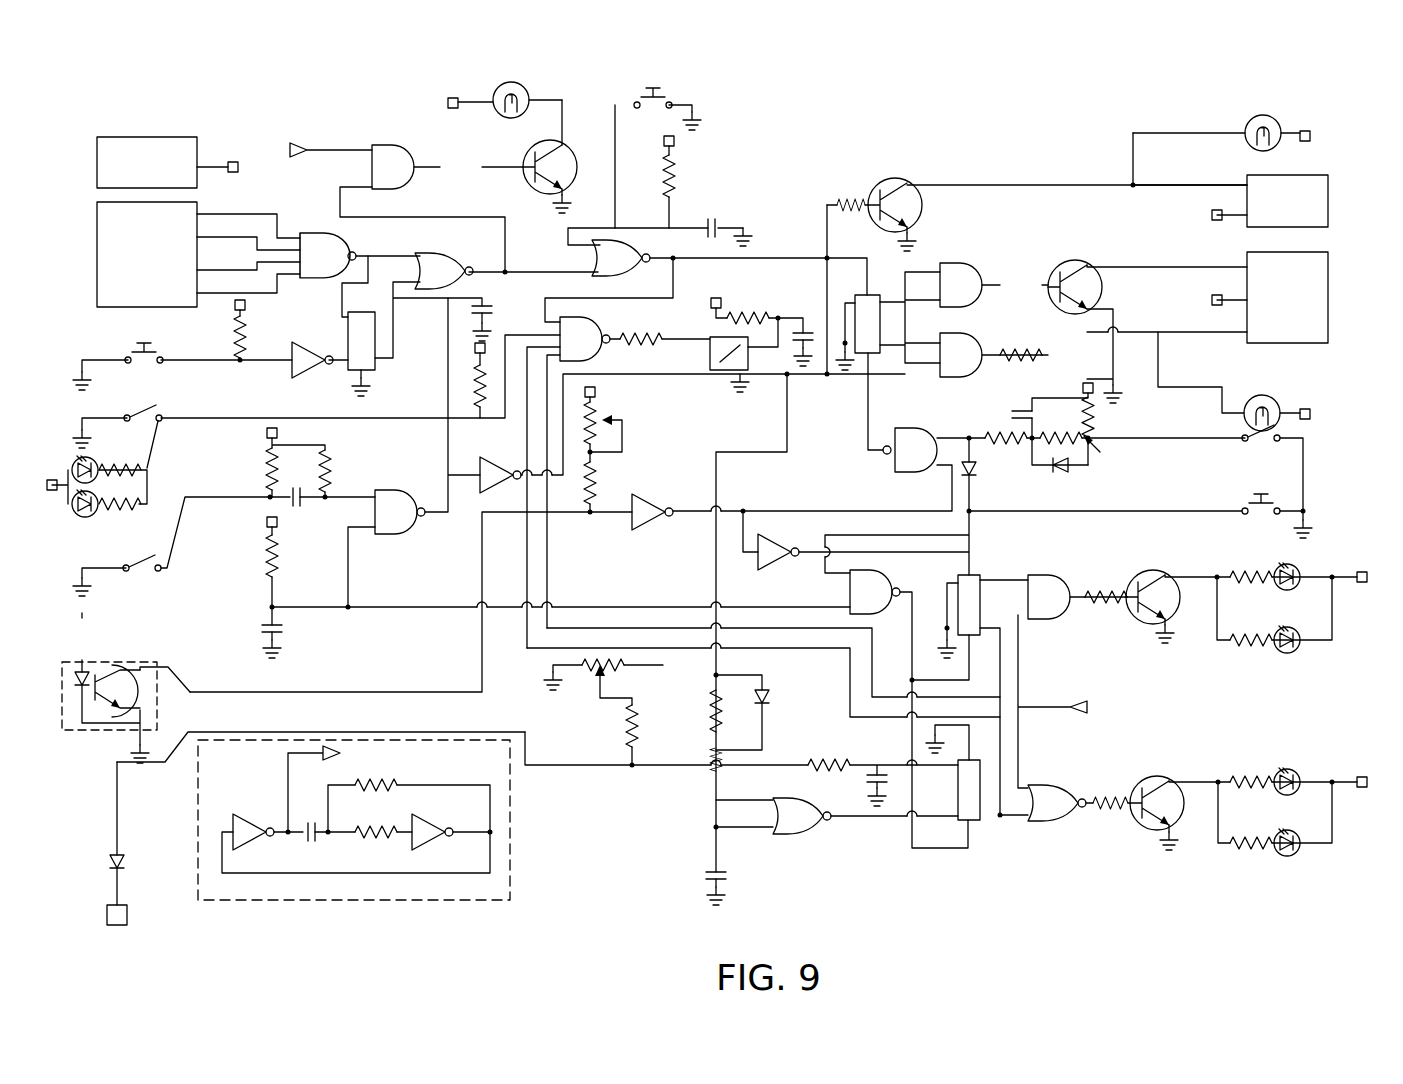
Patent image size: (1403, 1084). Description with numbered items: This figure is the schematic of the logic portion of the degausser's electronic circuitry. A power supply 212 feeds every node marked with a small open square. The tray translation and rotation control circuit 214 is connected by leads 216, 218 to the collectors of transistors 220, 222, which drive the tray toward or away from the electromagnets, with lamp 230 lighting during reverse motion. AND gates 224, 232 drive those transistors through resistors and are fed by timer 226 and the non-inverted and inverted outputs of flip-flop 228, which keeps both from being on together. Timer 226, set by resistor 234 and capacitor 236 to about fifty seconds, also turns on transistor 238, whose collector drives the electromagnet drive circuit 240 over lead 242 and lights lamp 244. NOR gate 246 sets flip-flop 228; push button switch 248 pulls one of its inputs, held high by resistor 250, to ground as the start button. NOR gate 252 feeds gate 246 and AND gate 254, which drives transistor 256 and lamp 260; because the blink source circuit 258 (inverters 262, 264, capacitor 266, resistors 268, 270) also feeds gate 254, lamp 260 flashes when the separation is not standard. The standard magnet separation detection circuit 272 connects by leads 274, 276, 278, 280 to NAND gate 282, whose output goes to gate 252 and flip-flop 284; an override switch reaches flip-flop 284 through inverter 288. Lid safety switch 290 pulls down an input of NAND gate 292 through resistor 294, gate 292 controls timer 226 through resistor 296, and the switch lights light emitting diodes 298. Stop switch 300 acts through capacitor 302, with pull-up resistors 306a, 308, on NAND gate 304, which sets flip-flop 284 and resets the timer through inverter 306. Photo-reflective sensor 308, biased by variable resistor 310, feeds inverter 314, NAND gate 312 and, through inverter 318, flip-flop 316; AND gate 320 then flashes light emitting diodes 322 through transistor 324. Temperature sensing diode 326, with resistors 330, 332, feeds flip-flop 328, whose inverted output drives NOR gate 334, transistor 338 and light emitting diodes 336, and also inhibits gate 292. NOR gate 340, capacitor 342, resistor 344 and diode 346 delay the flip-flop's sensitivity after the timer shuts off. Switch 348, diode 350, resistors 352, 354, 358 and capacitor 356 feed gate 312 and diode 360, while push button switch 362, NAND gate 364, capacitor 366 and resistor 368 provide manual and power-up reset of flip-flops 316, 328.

The power supply 212 is at (163, 135).
The tray translation and rotation control circuit 214 is at (1328, 325).
The lead 216 is at (1166, 265).
The lead 218 is at (1176, 330).
The transistor 220 is at (1060, 265).
The transistor 222 is at (1052, 340).
The AND gate 224 is at (962, 262).
The timer 226 is at (716, 368).
The flip-flop 228 is at (872, 300).
The lamp 230 is at (1282, 395).
The AND gate 232 is at (1000, 370).
The resistor 234 is at (750, 310).
The capacitor 236 is at (808, 325).
The transistor 238 is at (870, 195).
The electromagnet drive circuit 240 is at (1328, 222).
The lead 242 is at (1210, 183).
The lamp 244 is at (1248, 122).
The NOR gate 246 is at (590, 252).
The push button switch 248 is at (672, 95).
The resistor 250 is at (672, 186).
The NOR gate 252 is at (462, 244).
The AND gate 254 is at (414, 150).
The transistor 256 is at (528, 186).
The blink source circuit 258 is at (375, 900).
The lamp 260 is at (532, 96).
The inverter 262 is at (432, 840).
The inverter 264 is at (252, 814).
The capacitor 266 is at (310, 845).
The resistor 268 is at (378, 842).
The resistor 270 is at (378, 782).
The standard magnet separation detection system circuit 272 is at (125, 307).
The lead 274 is at (253, 193).
The lead 276 is at (257, 237).
The lead 278 is at (242, 268).
The lead 280 is at (218, 293).
The NAND gate 282 is at (318, 233).
The flip-flop 284 is at (348, 335).
The inverter 288 is at (298, 372).
The lid safety switch 290 is at (130, 413).
The NAND gate 292 is at (604, 326).
The resistor 294 is at (478, 385).
The resistor 296 is at (670, 345).
The light emitting diodes 298 is at (92, 462).
The stop switch 300 is at (122, 566).
The capacitor 302 is at (300, 507).
The NAND gate 304 is at (398, 535).
The inverter 306 is at (478, 465).
The resistor 306a is at (268, 470).
The photo-reflective sensor 308 is at (328, 460).
The resistor 310 is at (612, 415).
The NAND gate 312 is at (930, 428).
The inverter 314 is at (640, 530).
The flip-flop 316 is at (975, 578).
The inverter 318 is at (775, 562).
The AND gate 320 is at (1058, 576).
The light emitting diodes 322 is at (1280, 628).
The transistor 324 is at (1172, 552).
The temperature sensing diode 326 is at (120, 850).
The flip-flop 328 is at (975, 822).
The resistor 330 is at (832, 760).
The adjustable resistor 332 is at (590, 672).
The NOR gate 334 is at (1060, 784).
The light emitting diodes 336 is at (1280, 835).
The transistor 338 is at (1163, 780).
The NOR gate 340 is at (815, 830).
The capacitor 342 is at (706, 872).
The resistor 344 is at (712, 708).
The diode 346 is at (770, 702).
The switch 348 is at (1258, 442).
The diode 350 is at (1075, 470).
The resistor 352 is at (1098, 456).
The resistor 354 is at (1092, 425).
The capacitor 356 is at (1020, 410).
The resistor 358 is at (982, 408).
The diode 360 is at (976, 472).
The push button switch 362 is at (1245, 500).
The NAND gate 364 is at (890, 575).
The capacitor 366 is at (262, 628).
The resistor 368 is at (268, 568).